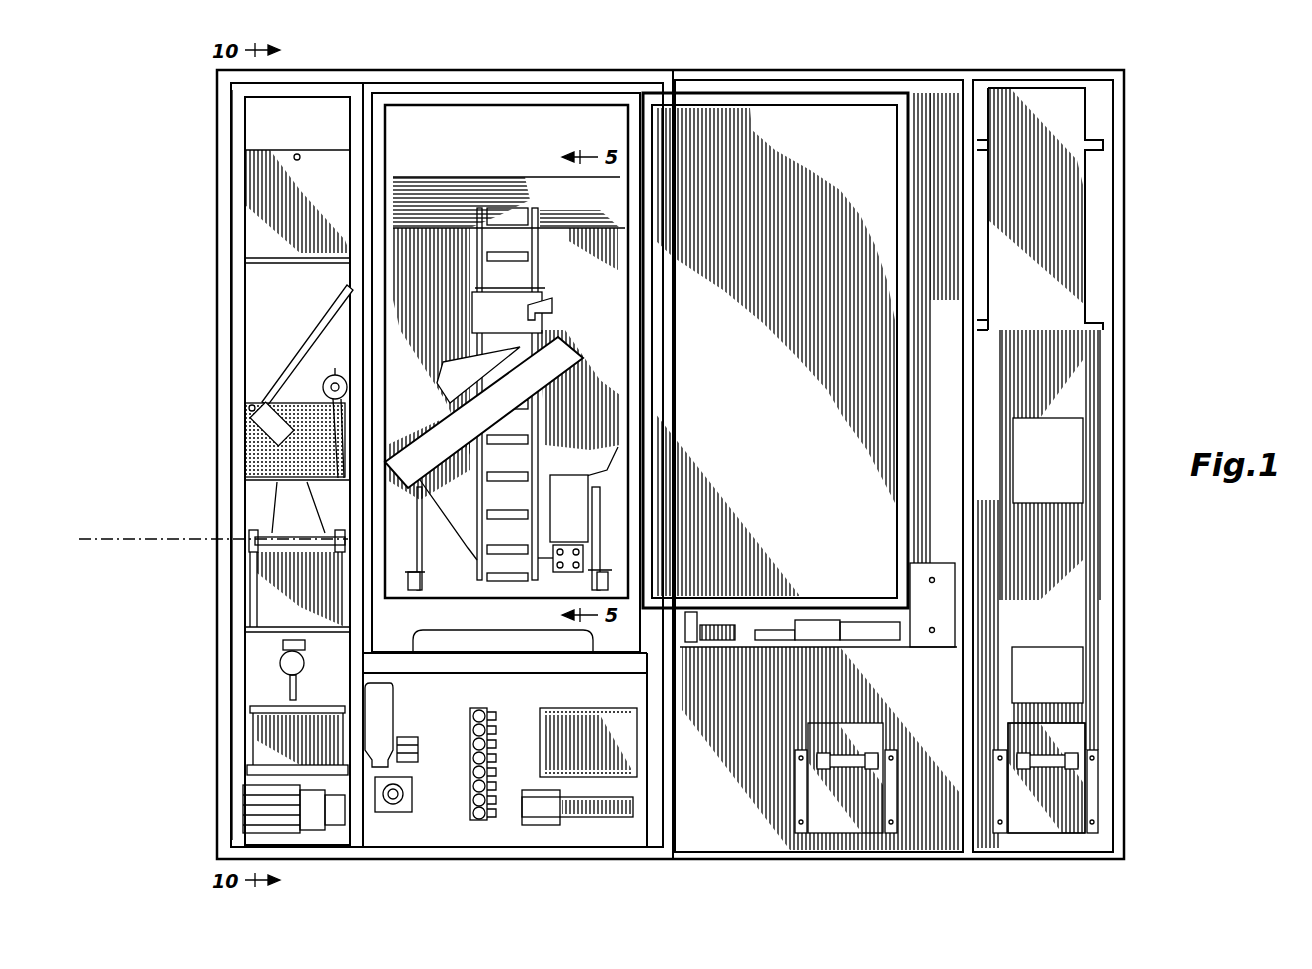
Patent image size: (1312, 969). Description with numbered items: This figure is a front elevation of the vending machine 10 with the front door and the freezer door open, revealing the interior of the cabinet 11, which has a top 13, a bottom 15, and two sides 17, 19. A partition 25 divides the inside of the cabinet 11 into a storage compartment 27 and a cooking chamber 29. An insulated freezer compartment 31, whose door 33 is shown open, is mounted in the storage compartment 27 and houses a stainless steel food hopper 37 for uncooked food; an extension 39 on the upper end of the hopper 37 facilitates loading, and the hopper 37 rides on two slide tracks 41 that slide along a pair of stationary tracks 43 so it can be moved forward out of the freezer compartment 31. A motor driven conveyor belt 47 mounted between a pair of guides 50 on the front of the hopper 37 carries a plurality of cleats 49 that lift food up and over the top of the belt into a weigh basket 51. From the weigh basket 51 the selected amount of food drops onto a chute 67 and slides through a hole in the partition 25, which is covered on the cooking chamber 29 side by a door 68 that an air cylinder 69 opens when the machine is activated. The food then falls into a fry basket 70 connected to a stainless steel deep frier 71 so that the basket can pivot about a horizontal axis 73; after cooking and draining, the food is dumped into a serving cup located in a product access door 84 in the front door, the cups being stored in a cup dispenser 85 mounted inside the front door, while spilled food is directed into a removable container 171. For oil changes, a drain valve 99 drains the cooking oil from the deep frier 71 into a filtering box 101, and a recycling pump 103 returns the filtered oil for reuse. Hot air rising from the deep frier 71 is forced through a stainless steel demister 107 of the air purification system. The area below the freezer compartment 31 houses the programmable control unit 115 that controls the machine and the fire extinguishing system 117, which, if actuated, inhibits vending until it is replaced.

The vending machine 10 is at (180, 583).
The cabinet 11 is at (221, 343).
The top 13 is at (437, 78).
The bottom 15 is at (413, 856).
The side 17 is at (219, 500).
The side 19 is at (660, 835).
The partition 25 is at (357, 720).
The storage compartment 27 is at (500, 835).
The cooking chamber 29 is at (258, 692).
The freezer compartment 31 is at (505, 122).
The door 33 is at (832, 124).
The food hopper 37 is at (428, 250).
The extension 39 is at (528, 190).
The slide tracks 41 is at (590, 552).
The stationary tracks 43 is at (605, 582).
The conveyor belt 47 is at (522, 452).
The cleats 49 is at (528, 402).
The guides 50 is at (545, 262).
The weigh basket 51 is at (542, 320).
The chute 67 is at (555, 352).
The door 68 is at (388, 455).
The air cylinder 69 is at (245, 435).
The fry basket 70 is at (245, 446).
The deep frier 71 is at (260, 607).
The horizontal axis 73 is at (108, 539).
The product access door 84 is at (1060, 600).
The cup dispenser 85 is at (1060, 305).
The drain valve 99 is at (280, 668).
The filtering box 101 is at (263, 751).
The recycling pump 103 is at (254, 808).
The demister 107 is at (258, 298).
The programmable control unit 115 is at (560, 735).
The fire extinguishing system 117 is at (390, 712).
The container 171 is at (1065, 800).